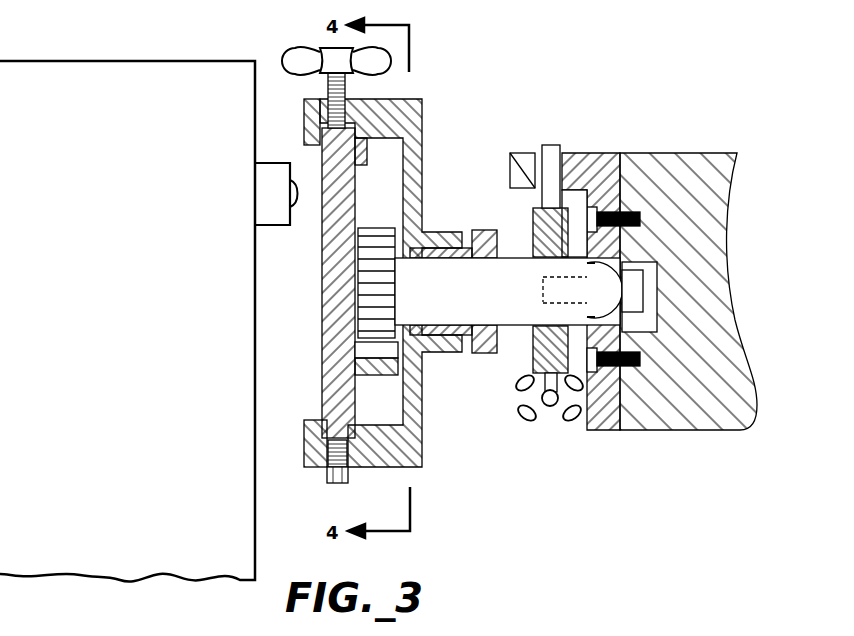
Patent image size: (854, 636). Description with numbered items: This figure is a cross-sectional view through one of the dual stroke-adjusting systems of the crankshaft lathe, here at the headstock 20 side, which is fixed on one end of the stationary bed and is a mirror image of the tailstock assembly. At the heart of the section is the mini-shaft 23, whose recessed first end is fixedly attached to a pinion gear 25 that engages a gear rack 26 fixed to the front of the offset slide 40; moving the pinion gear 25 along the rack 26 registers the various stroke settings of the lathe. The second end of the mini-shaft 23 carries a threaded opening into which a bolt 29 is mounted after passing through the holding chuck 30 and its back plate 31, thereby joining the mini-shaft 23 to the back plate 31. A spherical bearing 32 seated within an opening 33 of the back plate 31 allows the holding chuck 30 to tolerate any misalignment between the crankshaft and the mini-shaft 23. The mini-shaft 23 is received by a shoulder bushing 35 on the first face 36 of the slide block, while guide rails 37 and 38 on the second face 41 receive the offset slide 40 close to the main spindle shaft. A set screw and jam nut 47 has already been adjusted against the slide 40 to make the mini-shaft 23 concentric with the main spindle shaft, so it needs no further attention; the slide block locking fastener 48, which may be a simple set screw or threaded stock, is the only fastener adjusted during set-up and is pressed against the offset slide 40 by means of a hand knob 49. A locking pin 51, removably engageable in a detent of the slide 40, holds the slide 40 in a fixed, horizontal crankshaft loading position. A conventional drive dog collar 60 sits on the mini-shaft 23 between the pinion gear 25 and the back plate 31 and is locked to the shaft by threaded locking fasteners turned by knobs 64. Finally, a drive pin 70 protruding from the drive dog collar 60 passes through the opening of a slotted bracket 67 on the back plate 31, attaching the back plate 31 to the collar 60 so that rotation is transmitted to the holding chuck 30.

The headstock 20 is at (38, 61).
The mini-shaft 23 is at (517, 327).
The pinion gear 25 is at (365, 311).
The gear rack 26 is at (372, 352).
The bolt 29 is at (642, 284).
The holding chuck 30 is at (670, 176).
The back plate 31 is at (593, 176).
The spherical bearing 32 is at (625, 316).
The opening 33 is at (620, 266).
The shoulder bushing 35 is at (484, 230).
The first face 36 is at (423, 140).
The guide rail 37 is at (318, 122).
The guide rail 38 is at (312, 467).
The offset slide 40 is at (323, 153).
The second face 41 is at (402, 172).
The set screw and jam nut 47 is at (347, 482).
The slide block locking fastener 48 is at (346, 98).
The hand knob 49 is at (283, 48).
The locking pin 51 is at (298, 204).
The drive dog collar 60 is at (532, 233).
The knob 64 is at (523, 418).
The slotted bracket 67 is at (522, 152).
The drive pin 70 is at (553, 146).